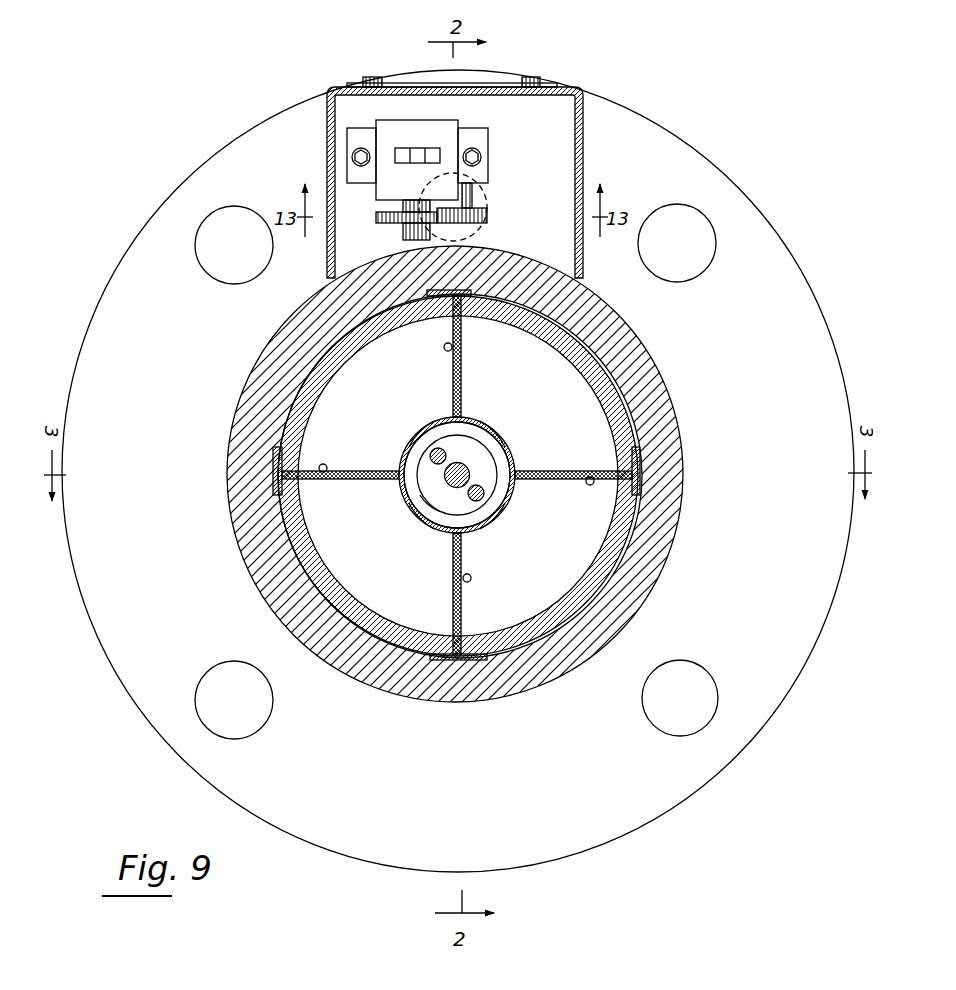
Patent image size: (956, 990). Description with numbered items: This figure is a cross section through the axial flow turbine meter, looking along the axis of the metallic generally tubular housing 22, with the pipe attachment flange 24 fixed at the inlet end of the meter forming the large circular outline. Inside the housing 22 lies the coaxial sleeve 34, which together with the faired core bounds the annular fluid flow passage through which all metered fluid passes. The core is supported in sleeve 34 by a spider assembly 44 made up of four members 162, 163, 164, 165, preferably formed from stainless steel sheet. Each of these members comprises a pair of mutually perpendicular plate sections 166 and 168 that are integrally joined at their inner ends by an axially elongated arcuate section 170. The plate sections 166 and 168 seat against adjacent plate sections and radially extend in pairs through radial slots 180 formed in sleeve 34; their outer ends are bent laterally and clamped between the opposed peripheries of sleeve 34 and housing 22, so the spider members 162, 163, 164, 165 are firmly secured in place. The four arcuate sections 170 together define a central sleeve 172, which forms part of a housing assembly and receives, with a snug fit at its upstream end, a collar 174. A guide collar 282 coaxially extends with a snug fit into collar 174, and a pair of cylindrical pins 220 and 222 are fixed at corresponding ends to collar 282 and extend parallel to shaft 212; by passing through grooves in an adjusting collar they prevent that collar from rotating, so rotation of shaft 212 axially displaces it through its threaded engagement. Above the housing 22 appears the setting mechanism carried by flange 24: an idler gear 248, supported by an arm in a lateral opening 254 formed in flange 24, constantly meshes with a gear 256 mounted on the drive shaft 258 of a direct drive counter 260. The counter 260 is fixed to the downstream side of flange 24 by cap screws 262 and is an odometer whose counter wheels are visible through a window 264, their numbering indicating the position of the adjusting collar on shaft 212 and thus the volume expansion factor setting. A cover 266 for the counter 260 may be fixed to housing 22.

The tubular housing 22 is at (656, 592).
The pipe attachment flange 24 is at (767, 721).
The sleeve 34 is at (554, 640).
The spider assembly 44 is at (314, 463).
The spider member 162 is at (480, 538).
The spider member 163 is at (494, 421).
The spider member 164 is at (427, 419).
The spider member 165 is at (408, 522).
The plate section 166 is at (324, 478).
The plate section 168 is at (461, 347).
The arcuate section 170 is at (422, 432).
The sleeve 172 is at (399, 458).
The collar 174 is at (490, 440).
The radial slot 180 is at (275, 490).
The shaft 212 is at (469, 477).
The cylindrical pin 220 is at (432, 452).
The cylindrical pin 222 is at (481, 497).
The idler gear 248 is at (488, 213).
The lateral opening 254 is at (483, 196).
The gear 256 is at (377, 218).
The drive shaft 258 is at (404, 233).
The direct drive counter 260 is at (389, 125).
The cap screw 262 is at (351, 157).
The window 264 is at (408, 147).
The cover 266 is at (584, 100).
The guide collar 282 is at (431, 512).